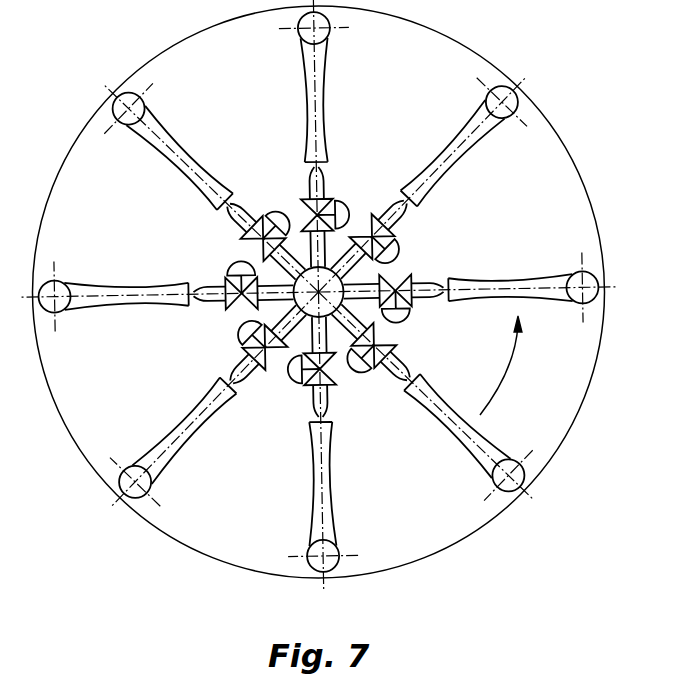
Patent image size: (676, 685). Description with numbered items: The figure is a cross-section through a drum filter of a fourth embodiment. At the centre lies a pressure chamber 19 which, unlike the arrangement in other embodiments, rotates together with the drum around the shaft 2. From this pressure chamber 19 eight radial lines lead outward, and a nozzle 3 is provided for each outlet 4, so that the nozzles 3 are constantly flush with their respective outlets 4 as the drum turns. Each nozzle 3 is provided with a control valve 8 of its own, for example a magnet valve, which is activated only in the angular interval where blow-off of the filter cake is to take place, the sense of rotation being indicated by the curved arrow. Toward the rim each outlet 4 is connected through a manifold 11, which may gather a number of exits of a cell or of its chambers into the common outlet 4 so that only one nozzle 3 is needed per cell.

The shaft 2 is at (298, 322).
The nozzle 3 is at (250, 218).
The outlet 4 is at (200, 165).
The control valve 8 is at (382, 346).
The manifold 11 is at (333, 548).
The pressure chamber 19 is at (343, 280).